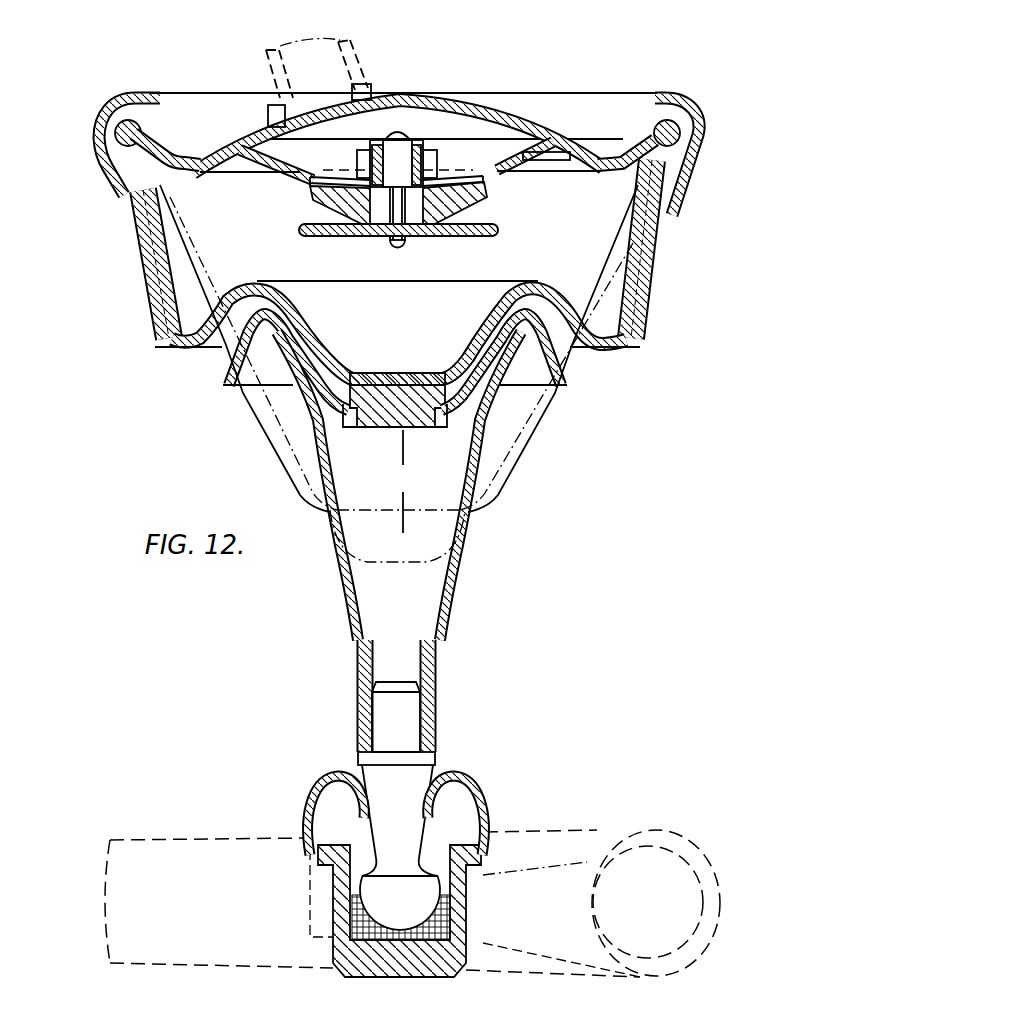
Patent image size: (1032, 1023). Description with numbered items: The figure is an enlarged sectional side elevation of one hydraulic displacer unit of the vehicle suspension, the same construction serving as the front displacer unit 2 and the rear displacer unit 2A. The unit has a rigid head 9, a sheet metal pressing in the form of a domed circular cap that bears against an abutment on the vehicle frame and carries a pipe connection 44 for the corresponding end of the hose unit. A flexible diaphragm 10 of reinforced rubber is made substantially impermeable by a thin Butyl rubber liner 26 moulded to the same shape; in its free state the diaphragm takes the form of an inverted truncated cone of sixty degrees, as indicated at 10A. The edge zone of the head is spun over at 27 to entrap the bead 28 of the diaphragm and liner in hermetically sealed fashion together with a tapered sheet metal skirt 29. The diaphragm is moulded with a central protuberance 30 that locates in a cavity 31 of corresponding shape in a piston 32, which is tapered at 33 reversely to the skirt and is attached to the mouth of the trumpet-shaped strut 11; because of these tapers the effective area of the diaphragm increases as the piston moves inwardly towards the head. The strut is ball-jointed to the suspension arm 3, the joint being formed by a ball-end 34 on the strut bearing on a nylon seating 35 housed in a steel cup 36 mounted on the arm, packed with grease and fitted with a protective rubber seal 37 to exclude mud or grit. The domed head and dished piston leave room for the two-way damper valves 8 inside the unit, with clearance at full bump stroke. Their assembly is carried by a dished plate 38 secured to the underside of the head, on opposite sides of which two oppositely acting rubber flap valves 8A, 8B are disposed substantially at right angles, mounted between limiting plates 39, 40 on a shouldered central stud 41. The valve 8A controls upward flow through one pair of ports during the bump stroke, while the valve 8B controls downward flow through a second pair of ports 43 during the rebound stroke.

The front displacer unit 2 is at (548, 95).
The rear displacer unit 2A is at (394, 149).
The suspension arm 3 is at (640, 828).
The two-way damper valves 8 is at (498, 194).
The rubber flap damper valve 8A is at (378, 158).
The rubber flap damper valve 8B is at (336, 198).
The rigid head 9 is at (454, 106).
The flexible diaphragm 10 is at (183, 349).
The free-state diaphragm form 10A is at (512, 464).
The ball-jointed strut 11 is at (438, 583).
The Butyl rubber liner 26 is at (373, 373).
The spun-over edge zone 27 is at (129, 207).
The bead 28 is at (132, 100).
The sheet metal skirt 29 is at (648, 305).
The central protuberance 30 is at (397, 496).
The cavity 31 is at (366, 408).
The piston 32 is at (467, 400).
The piston taper 33 is at (224, 376).
The ball-end 34 is at (390, 905).
The seating 35 is at (438, 925).
The steel cup 36 is at (368, 951).
The protective rubber seal 37 is at (477, 786).
The dished plate 38 is at (267, 160).
The limiting plate 39 is at (404, 137).
The limiting plate 40 is at (470, 237).
The shouldered central stud 41 is at (396, 228).
The ports 43 is at (456, 178).
The pipe connection 44 is at (360, 66).